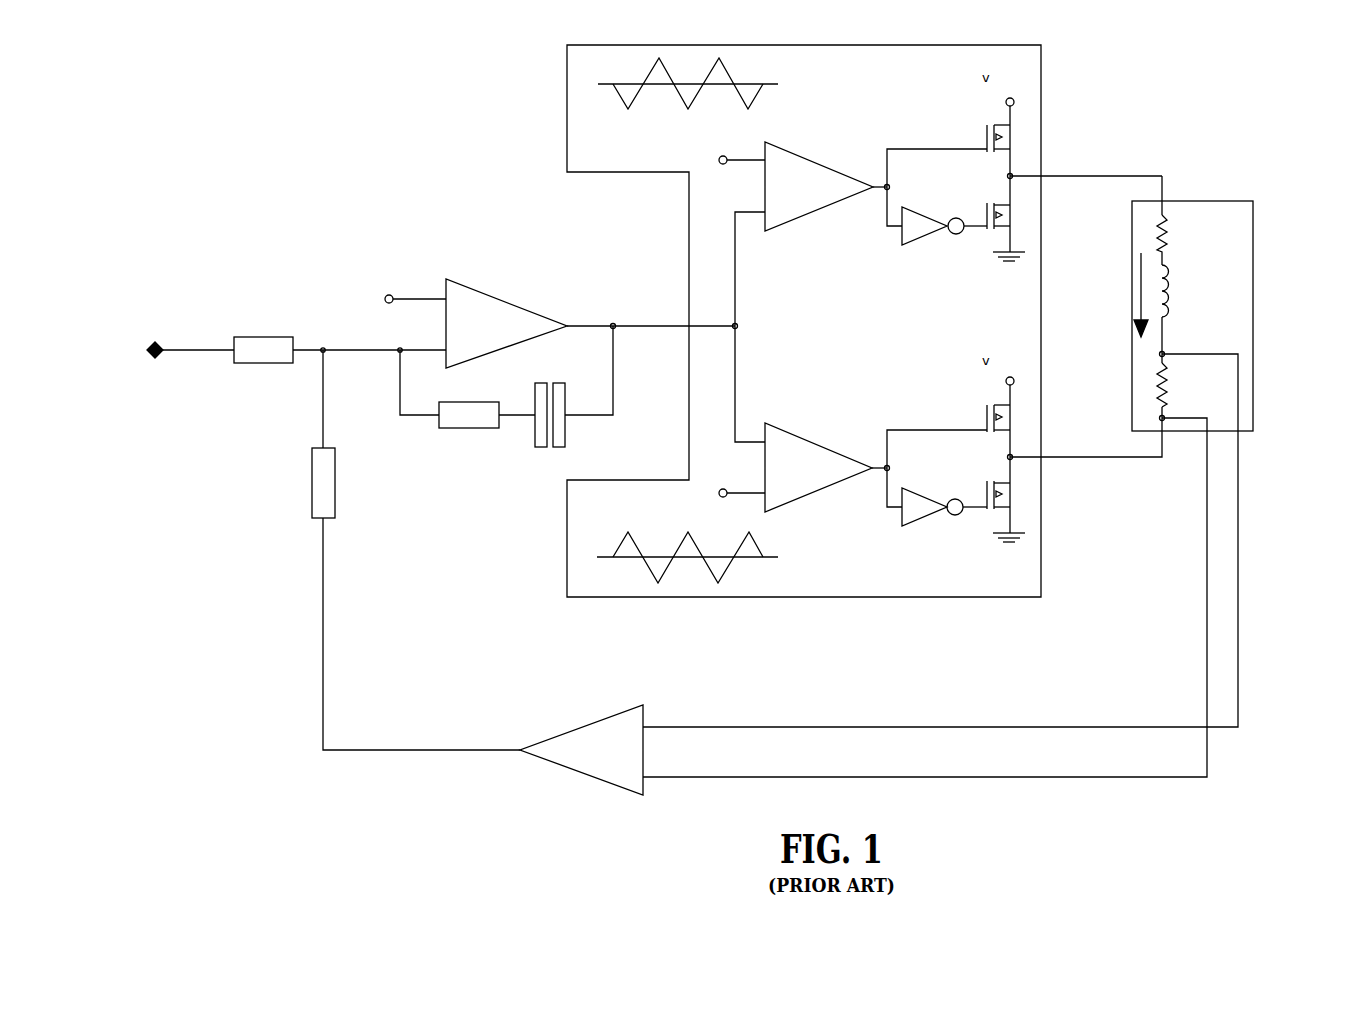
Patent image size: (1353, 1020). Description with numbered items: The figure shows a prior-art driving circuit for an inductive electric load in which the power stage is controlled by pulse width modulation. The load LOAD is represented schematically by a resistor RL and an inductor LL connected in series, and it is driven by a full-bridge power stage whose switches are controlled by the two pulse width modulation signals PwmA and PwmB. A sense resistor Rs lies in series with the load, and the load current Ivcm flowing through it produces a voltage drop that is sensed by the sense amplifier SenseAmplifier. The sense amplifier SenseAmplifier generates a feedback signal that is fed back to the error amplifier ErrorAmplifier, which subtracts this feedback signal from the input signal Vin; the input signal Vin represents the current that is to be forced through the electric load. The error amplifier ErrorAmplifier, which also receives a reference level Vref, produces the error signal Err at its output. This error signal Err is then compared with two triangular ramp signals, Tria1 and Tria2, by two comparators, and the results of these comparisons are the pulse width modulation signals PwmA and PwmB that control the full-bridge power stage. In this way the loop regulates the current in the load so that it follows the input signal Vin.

The input signal Vin is at (185, 345).
The reference voltage Vref is at (389, 289).
The error amplifier ErrorAmplifier is at (506, 282).
The error signal Err is at (671, 328).
The triangular ramp signal Tria1 is at (688, 101).
The triangular ramp signal Tria2 is at (687, 540).
The pulse width modulation signal PwmA is at (853, 181).
The pulse width modulation signal PwmB is at (853, 463).
The inductive electric load LOAD is at (1226, 316).
The resistor RL is at (1179, 240).
The inductor LL is at (1181, 314).
The sense resistor Rs is at (1179, 385).
The VCM current Ivcm is at (1109, 295).
The sense amplifier SenseAmplifier is at (569, 788).